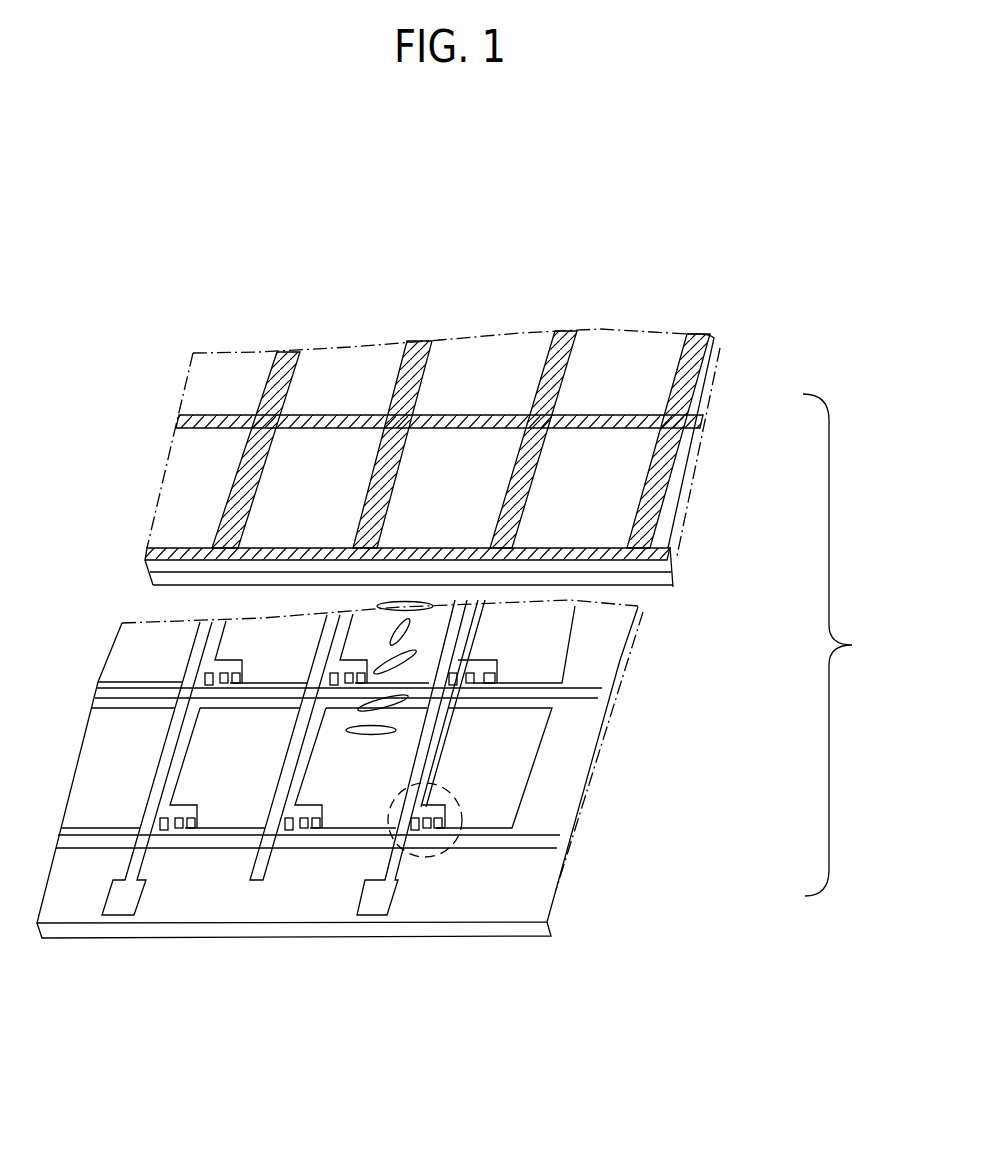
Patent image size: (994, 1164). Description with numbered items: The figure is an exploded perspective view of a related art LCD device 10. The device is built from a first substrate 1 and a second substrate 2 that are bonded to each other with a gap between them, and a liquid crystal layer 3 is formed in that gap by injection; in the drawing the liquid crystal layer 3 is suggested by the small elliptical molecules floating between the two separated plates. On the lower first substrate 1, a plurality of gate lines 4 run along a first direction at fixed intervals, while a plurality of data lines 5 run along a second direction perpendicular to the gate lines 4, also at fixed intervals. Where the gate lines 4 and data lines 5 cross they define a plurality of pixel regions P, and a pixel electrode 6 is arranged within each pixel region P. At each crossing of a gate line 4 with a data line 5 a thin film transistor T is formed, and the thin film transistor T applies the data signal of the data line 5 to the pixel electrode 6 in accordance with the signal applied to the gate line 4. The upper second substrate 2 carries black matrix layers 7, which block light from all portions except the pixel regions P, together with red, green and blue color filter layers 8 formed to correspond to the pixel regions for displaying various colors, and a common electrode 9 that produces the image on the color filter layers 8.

The first substrate 1 is at (513, 928).
The second substrate 2 is at (657, 565).
The liquid crystal layer 3 is at (375, 673).
The gate lines 4 is at (522, 843).
The data lines 5 is at (383, 867).
The pixel electrode 6 is at (528, 780).
The black matrix layer 7 is at (697, 418).
The R/G/B color filter layer 8 is at (213, 466).
The common electrode 9 is at (658, 578).
The LCD device 10 is at (852, 645).
The pixel region P is at (568, 737).
The thin film transistor T is at (425, 858).